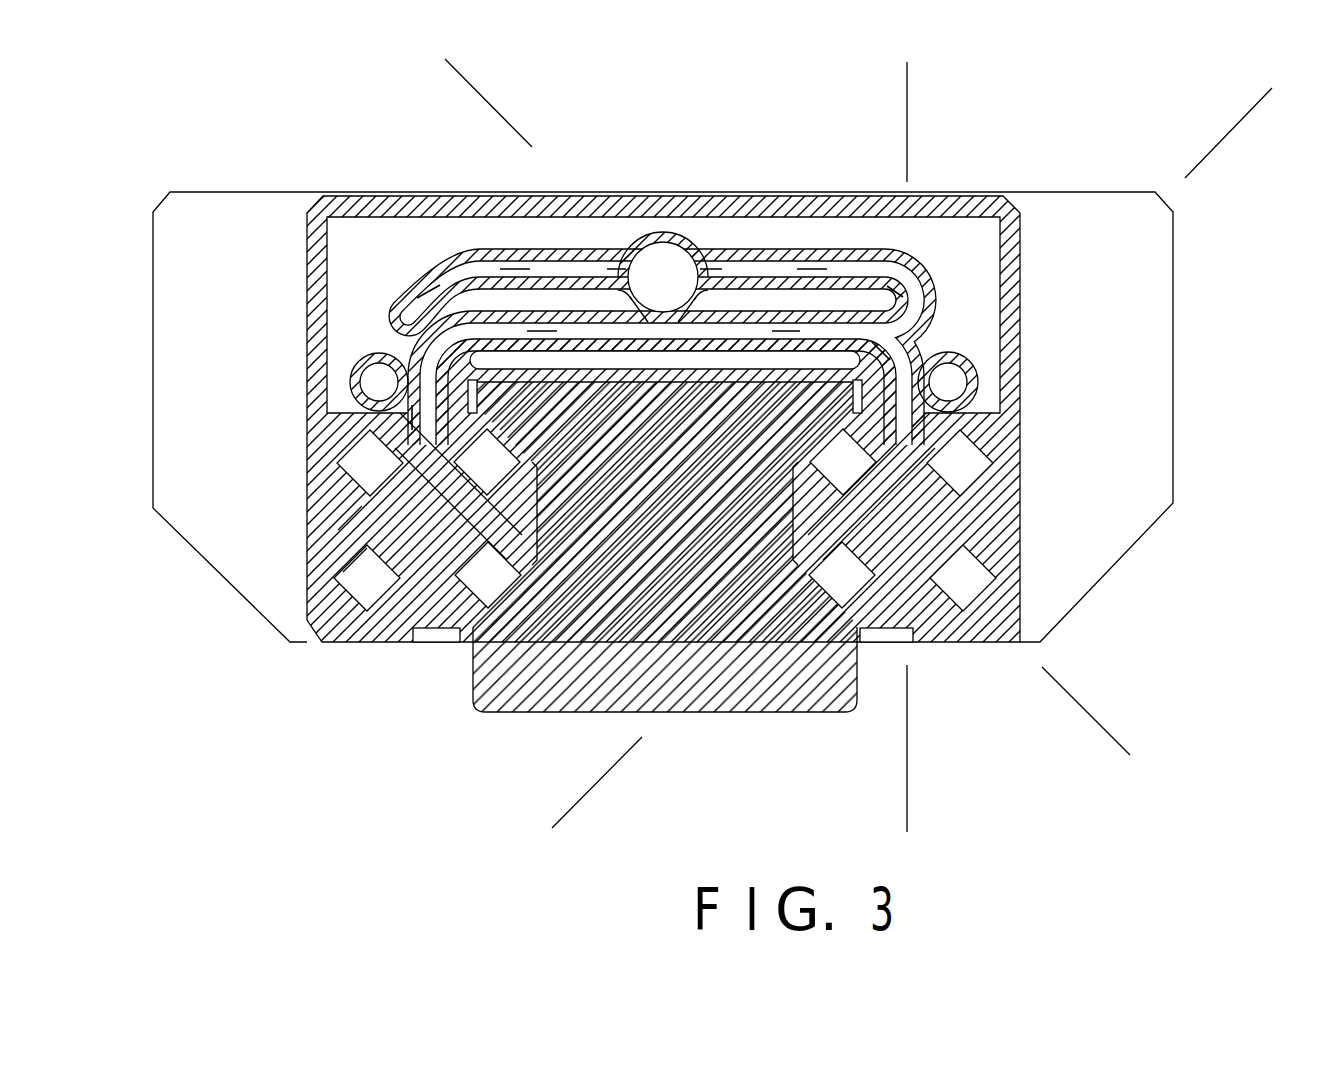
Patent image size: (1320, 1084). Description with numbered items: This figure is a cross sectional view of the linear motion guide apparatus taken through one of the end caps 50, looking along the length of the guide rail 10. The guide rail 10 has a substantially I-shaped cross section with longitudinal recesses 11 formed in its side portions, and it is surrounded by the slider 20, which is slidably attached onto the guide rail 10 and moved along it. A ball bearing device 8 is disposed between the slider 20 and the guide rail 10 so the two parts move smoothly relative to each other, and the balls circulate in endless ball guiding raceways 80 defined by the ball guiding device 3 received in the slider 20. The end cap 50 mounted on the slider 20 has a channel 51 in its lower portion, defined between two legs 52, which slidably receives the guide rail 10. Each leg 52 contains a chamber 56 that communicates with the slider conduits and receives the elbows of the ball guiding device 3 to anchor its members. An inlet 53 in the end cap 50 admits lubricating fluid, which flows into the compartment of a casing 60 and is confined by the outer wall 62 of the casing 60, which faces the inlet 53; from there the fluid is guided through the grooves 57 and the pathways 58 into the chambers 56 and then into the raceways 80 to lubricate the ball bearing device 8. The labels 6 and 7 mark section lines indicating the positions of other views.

The ball guiding device 3 is at (962, 510).
The section line 6- 6 is at (487, 104).
The section line 7- 7 is at (1232, 136).
The ball bearing device 8 is at (907, 122).
The guide rail 10 is at (688, 683).
The longitudinal recesses 11 is at (530, 540).
The slider 20 is at (1122, 352).
The end caps 50 is at (963, 192).
The channel 51 is at (452, 605).
The legs 52 is at (350, 545).
The inlet 53 is at (663, 257).
The chambers 56 is at (362, 535).
The grooves 57 is at (913, 397).
The pathways 58 is at (430, 268).
The casing 60 is at (673, 258).
The outer wall 62 is at (645, 253).
The endless ball guiding raceways 80 is at (358, 592).